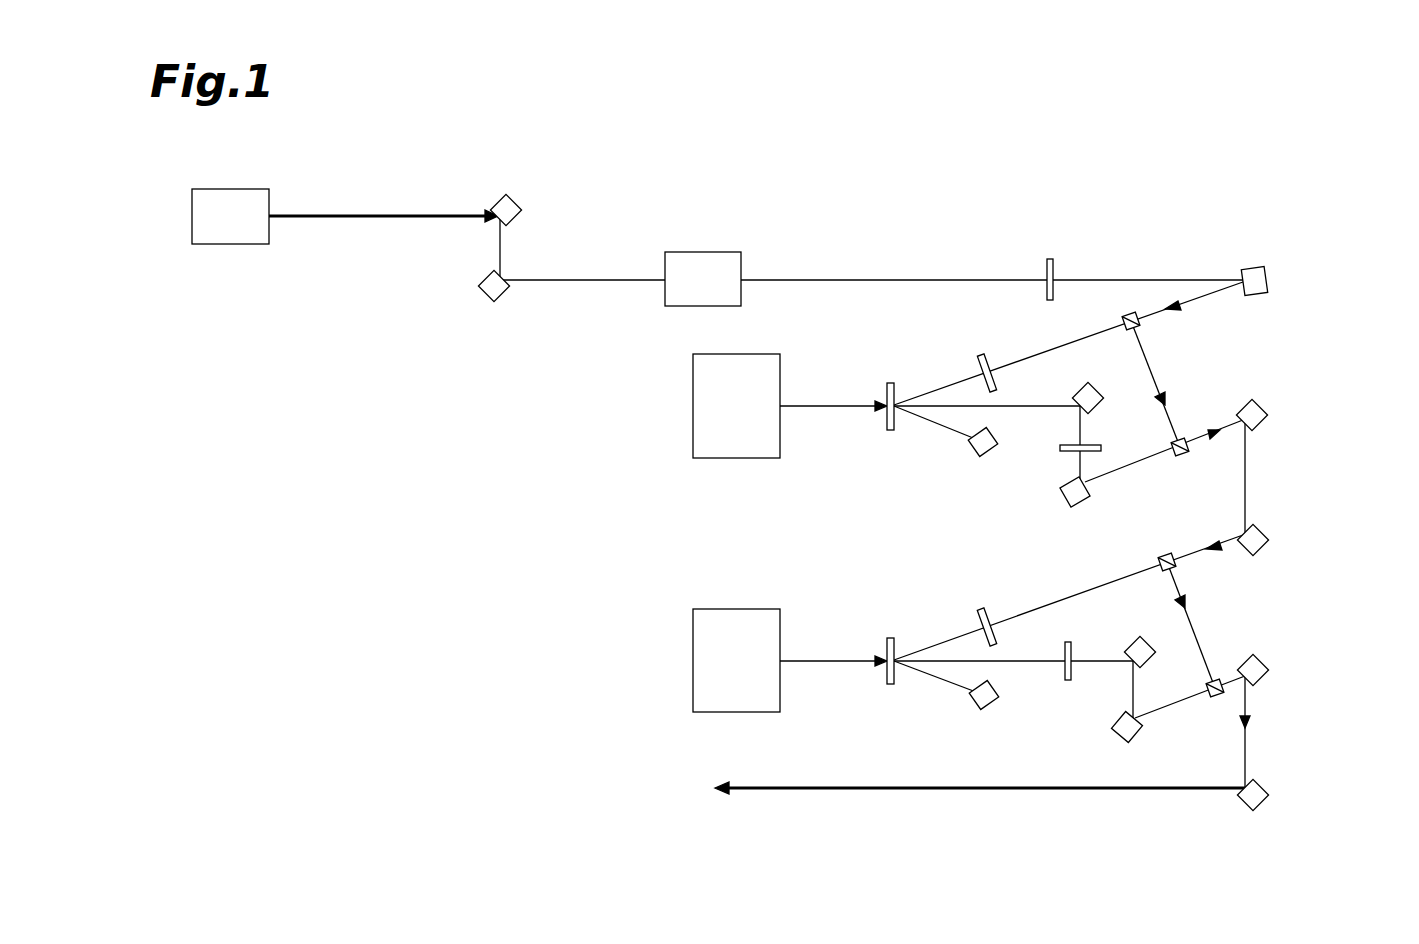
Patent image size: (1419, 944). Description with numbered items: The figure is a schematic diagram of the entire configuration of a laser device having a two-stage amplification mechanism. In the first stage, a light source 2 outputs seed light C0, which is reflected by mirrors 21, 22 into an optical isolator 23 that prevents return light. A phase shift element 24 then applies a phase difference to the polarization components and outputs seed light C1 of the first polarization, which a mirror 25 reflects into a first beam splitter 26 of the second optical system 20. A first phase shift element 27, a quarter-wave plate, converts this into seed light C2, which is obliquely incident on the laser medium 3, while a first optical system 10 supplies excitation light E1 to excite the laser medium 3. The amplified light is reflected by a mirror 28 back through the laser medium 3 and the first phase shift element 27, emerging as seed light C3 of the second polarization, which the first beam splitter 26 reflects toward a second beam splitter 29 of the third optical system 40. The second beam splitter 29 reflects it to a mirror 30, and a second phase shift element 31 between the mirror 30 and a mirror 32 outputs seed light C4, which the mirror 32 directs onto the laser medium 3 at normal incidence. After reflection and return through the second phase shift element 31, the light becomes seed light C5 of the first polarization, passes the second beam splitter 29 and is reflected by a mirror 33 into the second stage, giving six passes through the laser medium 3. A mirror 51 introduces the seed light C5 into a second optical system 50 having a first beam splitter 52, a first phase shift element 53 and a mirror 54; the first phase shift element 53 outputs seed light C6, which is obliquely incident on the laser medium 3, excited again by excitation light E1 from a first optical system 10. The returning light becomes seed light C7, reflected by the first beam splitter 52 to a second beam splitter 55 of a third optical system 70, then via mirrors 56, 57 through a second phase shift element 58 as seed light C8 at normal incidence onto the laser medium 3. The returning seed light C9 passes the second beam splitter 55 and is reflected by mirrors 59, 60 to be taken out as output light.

The light source 2 is at (233, 189).
The laser medium 3 is at (890, 432).
The first optical system 10 is at (735, 460).
The second optical system 20 is at (1268, 224).
The mirror 21 is at (520, 222).
The mirror 22 is at (508, 300).
The optical isolator 23 is at (741, 262).
The phase shift element 24 is at (1047, 265).
The mirror 25 is at (1268, 272).
The first beam splitter 26 is at (1140, 322).
The first phase shift element 27 is at (993, 362).
The mirror (second mirror) 28 is at (996, 450).
The second beam splitter 29 is at (1183, 437).
The mirror (third mirror) 30 is at (1085, 503).
The second phase shift element 31 is at (1095, 445).
The mirror (third mirror) 32 is at (1103, 392).
The mirror 33 is at (1262, 408).
The third optical system 40 is at (1329, 391).
The second optical system 50 is at (1329, 511).
The mirror 51 is at (1265, 548).
The first beam splitter 52 is at (1177, 562).
The first phase shift element 53 is at (995, 615).
The mirror (second mirror) 54 is at (997, 700).
The second beam splitter 55 is at (1217, 680).
The mirror (third mirror) 56 is at (1117, 737).
The mirror (third mirror) 57 is at (1145, 640).
The second phase shift element 58 is at (1072, 672).
The mirror 59 is at (1265, 665).
The mirror 60 is at (1268, 802).
The third optical system 70 is at (1329, 668).
The seed light C0 is at (357, 218).
The seed light C1 is at (1180, 300).
The seed light C2 is at (935, 388).
The seed light C3 is at (1152, 370).
The seed light C4 is at (1025, 404).
The seed light C5 is at (1246, 470).
The seed light C6 is at (935, 640).
The seed light C7 is at (1190, 618).
The seed light C8 is at (1026, 658).
The seed light C9 is at (1078, 790).
The excitation light E1 is at (835, 408).